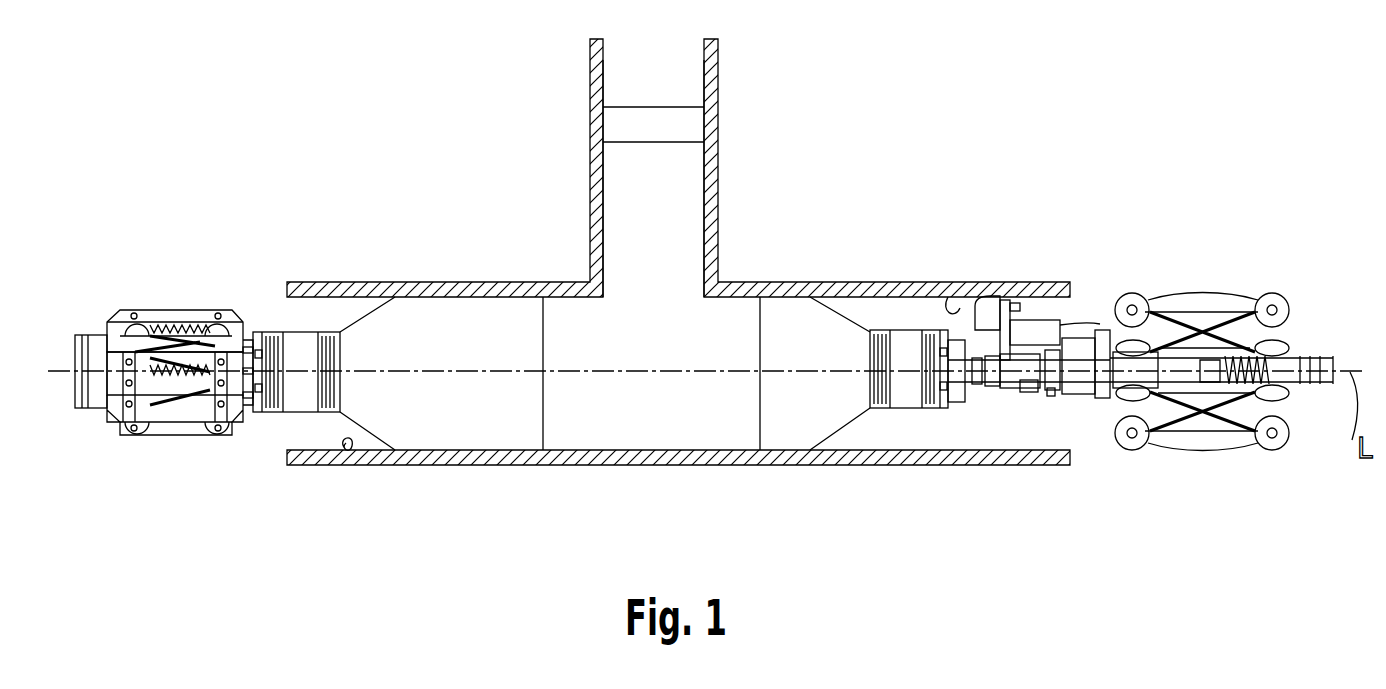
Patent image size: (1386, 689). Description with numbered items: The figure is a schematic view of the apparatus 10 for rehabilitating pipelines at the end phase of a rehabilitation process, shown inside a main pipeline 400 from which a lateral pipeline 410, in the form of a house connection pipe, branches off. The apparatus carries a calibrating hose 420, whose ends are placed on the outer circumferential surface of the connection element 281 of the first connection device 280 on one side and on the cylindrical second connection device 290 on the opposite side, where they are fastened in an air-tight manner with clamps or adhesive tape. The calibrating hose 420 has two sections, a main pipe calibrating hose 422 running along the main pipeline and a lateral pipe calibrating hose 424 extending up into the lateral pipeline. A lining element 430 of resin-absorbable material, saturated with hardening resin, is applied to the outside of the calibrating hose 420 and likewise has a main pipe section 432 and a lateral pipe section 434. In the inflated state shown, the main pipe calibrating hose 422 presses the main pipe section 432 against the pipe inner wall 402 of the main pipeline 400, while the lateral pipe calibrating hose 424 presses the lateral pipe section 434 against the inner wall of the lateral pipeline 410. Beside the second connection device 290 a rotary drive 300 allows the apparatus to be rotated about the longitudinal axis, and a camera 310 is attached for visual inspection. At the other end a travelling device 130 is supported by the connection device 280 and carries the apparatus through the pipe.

The pipe inspection robot 10 is at (1192, 280).
The travelling device 130 is at (138, 303).
The first connection device 280 is at (164, 379).
The connection element 281 is at (301, 400).
The second connection device 290 is at (907, 400).
The rotary drive 300 is at (1040, 365).
The camera 310 is at (987, 310).
The main pipeline 400 is at (900, 280).
The pipe inner wall 402 is at (346, 452).
The lateral pipeline 410 is at (722, 70).
The calibrating hose 420 is at (345, 310).
The main pipe calibrating hose 422 is at (435, 325).
The lateral pipe calibrating hose 424 is at (612, 125).
The lining element 430 is at (541, 318).
The main pipe section 432 is at (735, 318).
The lateral pipe section 434 is at (698, 192).